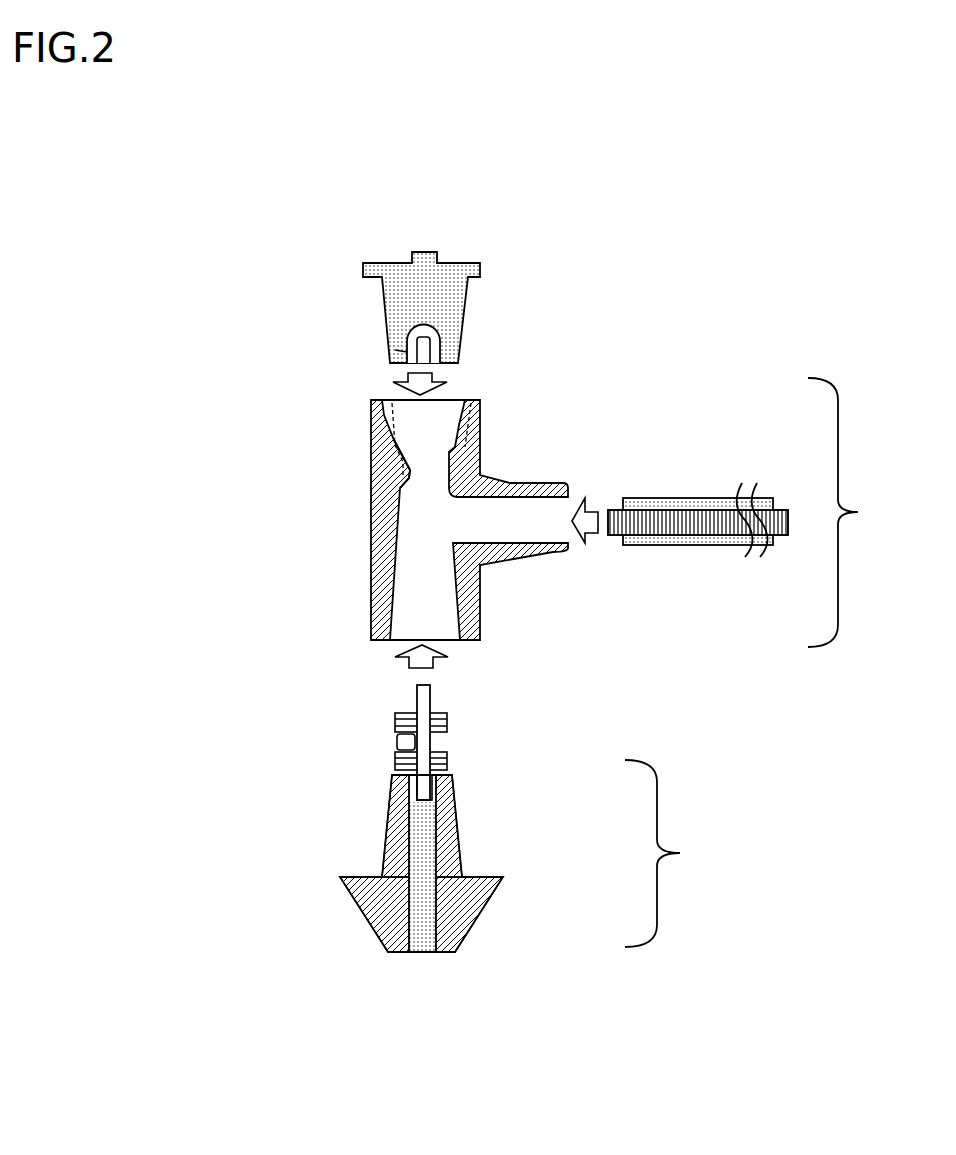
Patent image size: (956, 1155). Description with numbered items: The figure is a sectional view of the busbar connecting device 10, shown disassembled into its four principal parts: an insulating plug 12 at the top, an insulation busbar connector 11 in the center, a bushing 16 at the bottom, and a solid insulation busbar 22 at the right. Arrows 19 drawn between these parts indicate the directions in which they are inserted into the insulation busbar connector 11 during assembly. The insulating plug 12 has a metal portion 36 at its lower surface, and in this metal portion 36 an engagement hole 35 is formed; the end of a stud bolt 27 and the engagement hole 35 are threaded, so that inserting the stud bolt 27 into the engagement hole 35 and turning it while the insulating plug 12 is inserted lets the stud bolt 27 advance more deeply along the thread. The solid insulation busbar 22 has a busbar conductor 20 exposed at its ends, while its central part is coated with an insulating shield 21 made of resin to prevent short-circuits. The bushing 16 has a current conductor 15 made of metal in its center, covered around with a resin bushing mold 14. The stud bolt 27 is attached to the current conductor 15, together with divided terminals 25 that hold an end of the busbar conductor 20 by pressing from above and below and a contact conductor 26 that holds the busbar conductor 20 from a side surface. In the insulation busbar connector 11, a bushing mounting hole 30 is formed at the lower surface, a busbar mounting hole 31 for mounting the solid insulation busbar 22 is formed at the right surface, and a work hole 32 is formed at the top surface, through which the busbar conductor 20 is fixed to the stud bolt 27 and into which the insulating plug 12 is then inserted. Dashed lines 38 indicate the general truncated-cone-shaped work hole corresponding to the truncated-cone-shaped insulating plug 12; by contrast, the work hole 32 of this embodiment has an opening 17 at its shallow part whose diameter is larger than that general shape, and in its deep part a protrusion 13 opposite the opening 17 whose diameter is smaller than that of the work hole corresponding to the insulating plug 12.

The busbar connecting device 10 is at (208, 208).
The insulation busbar connector 11 is at (371, 570).
The insulating plug 12 is at (460, 308).
The protrusion 13 is at (400, 478).
The bushing mold 14 is at (503, 878).
The current conductor 15 is at (462, 822).
The bushing 16 is at (550, 856).
The opening 17 is at (470, 398).
The arrows 19 is at (583, 538).
The busbar conductor 20 is at (722, 527).
The insulating shield 21 is at (697, 495).
The solid insulation busbar 22 is at (746, 512).
The divided terminals 25 is at (447, 750).
The contact conductor 26 is at (395, 742).
The stud bolt 27 is at (432, 700).
The bushing mounting hole 30 is at (412, 622).
The busbar mounting hole 31 is at (535, 508).
The work hole 32 is at (370, 402).
The engagement hole 35 is at (440, 340).
The metal portion 36 is at (395, 348).
The dashed lines 38 is at (483, 417).